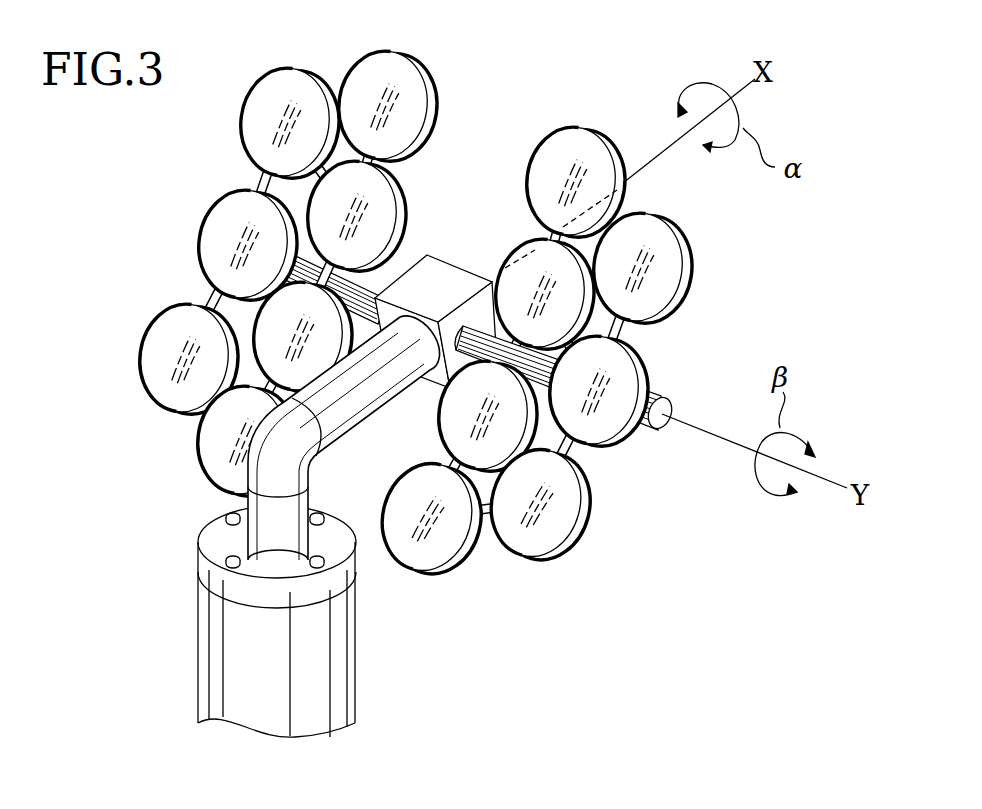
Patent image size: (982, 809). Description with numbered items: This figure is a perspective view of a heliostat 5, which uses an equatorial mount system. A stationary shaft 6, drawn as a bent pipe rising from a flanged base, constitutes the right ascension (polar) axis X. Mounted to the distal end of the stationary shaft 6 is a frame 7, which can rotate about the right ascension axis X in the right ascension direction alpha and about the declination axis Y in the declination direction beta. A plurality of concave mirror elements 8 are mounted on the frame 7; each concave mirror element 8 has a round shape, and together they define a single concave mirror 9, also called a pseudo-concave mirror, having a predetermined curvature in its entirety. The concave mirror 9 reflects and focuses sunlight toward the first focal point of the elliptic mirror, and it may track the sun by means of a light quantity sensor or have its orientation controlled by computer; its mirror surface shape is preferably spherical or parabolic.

The heliostat 5 is at (466, 655).
The stationary shaft 6 is at (368, 410).
The frame 7 is at (388, 164).
The concave mirror elements 8 is at (372, 140).
The concave mirror 9 is at (265, 252).